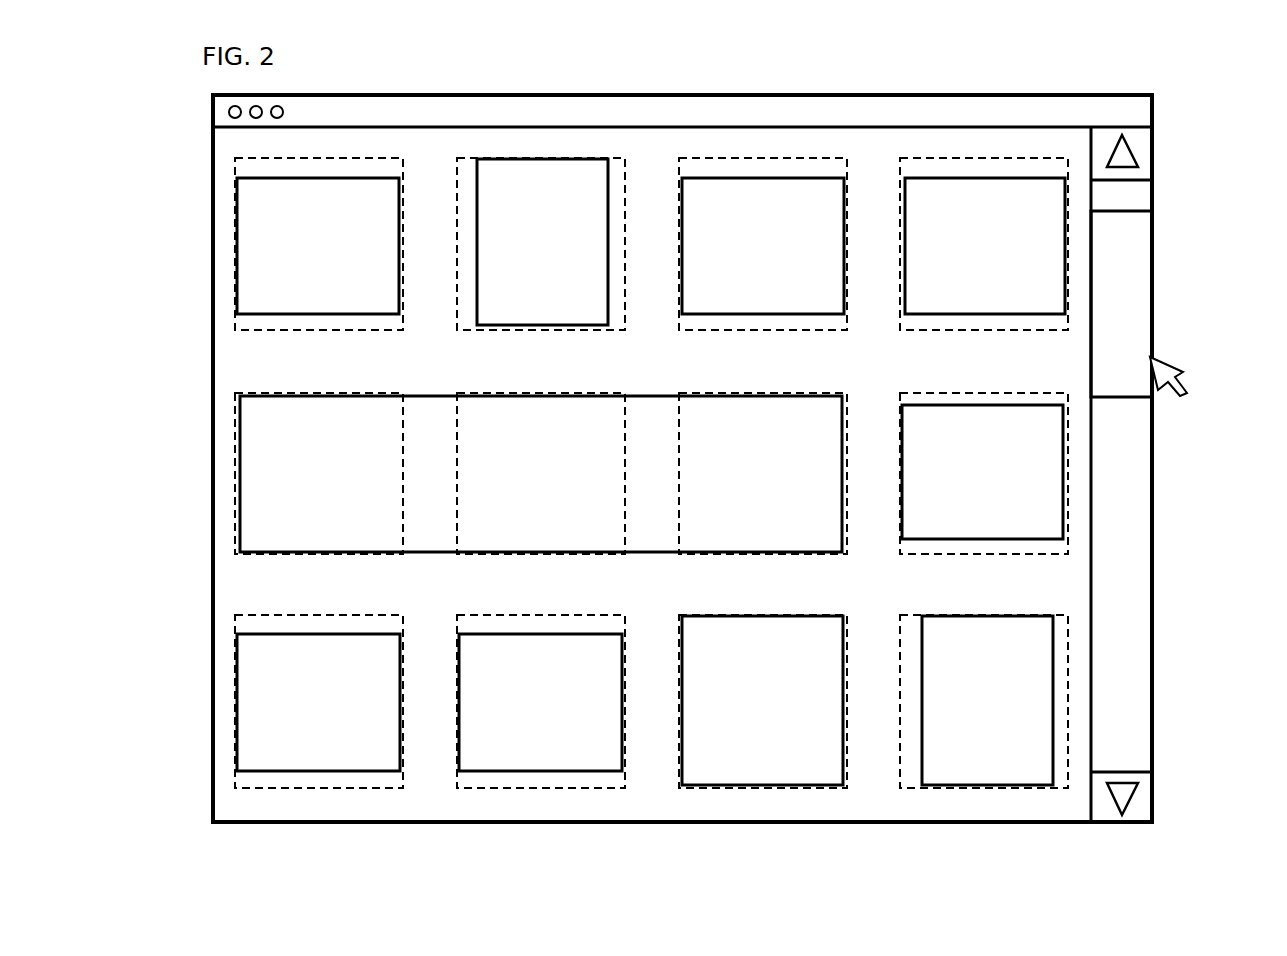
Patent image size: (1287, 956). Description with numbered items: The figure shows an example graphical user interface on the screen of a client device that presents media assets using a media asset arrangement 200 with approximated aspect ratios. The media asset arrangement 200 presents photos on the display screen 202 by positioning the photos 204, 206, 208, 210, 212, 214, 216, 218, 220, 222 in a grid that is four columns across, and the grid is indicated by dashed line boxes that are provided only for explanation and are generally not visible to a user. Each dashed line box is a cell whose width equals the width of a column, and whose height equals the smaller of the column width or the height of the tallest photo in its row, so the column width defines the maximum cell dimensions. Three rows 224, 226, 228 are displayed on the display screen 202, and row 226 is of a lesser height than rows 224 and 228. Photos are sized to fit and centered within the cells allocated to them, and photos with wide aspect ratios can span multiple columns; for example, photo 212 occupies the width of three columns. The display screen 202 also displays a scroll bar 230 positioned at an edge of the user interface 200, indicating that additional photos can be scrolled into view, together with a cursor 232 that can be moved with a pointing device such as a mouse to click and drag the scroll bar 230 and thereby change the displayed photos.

The media asset arrangement 200 is at (1145, 69).
The display screen 202 is at (682, 93).
The photo 204 is at (318, 246).
The photo 206 is at (542, 242).
The photo 208 is at (763, 246).
The photo 210 is at (985, 246).
The photo 212 is at (541, 474).
The photo 214 is at (982, 472).
The photo 216 is at (318, 702).
The photo 218 is at (540, 702).
The photo 220 is at (762, 700).
The photo 222 is at (987, 700).
The row 224 is at (235, 248).
The row 226 is at (235, 475).
The row 228 is at (235, 703).
The scroll bar 230 is at (1122, 318).
The cursor 232 is at (1180, 368).